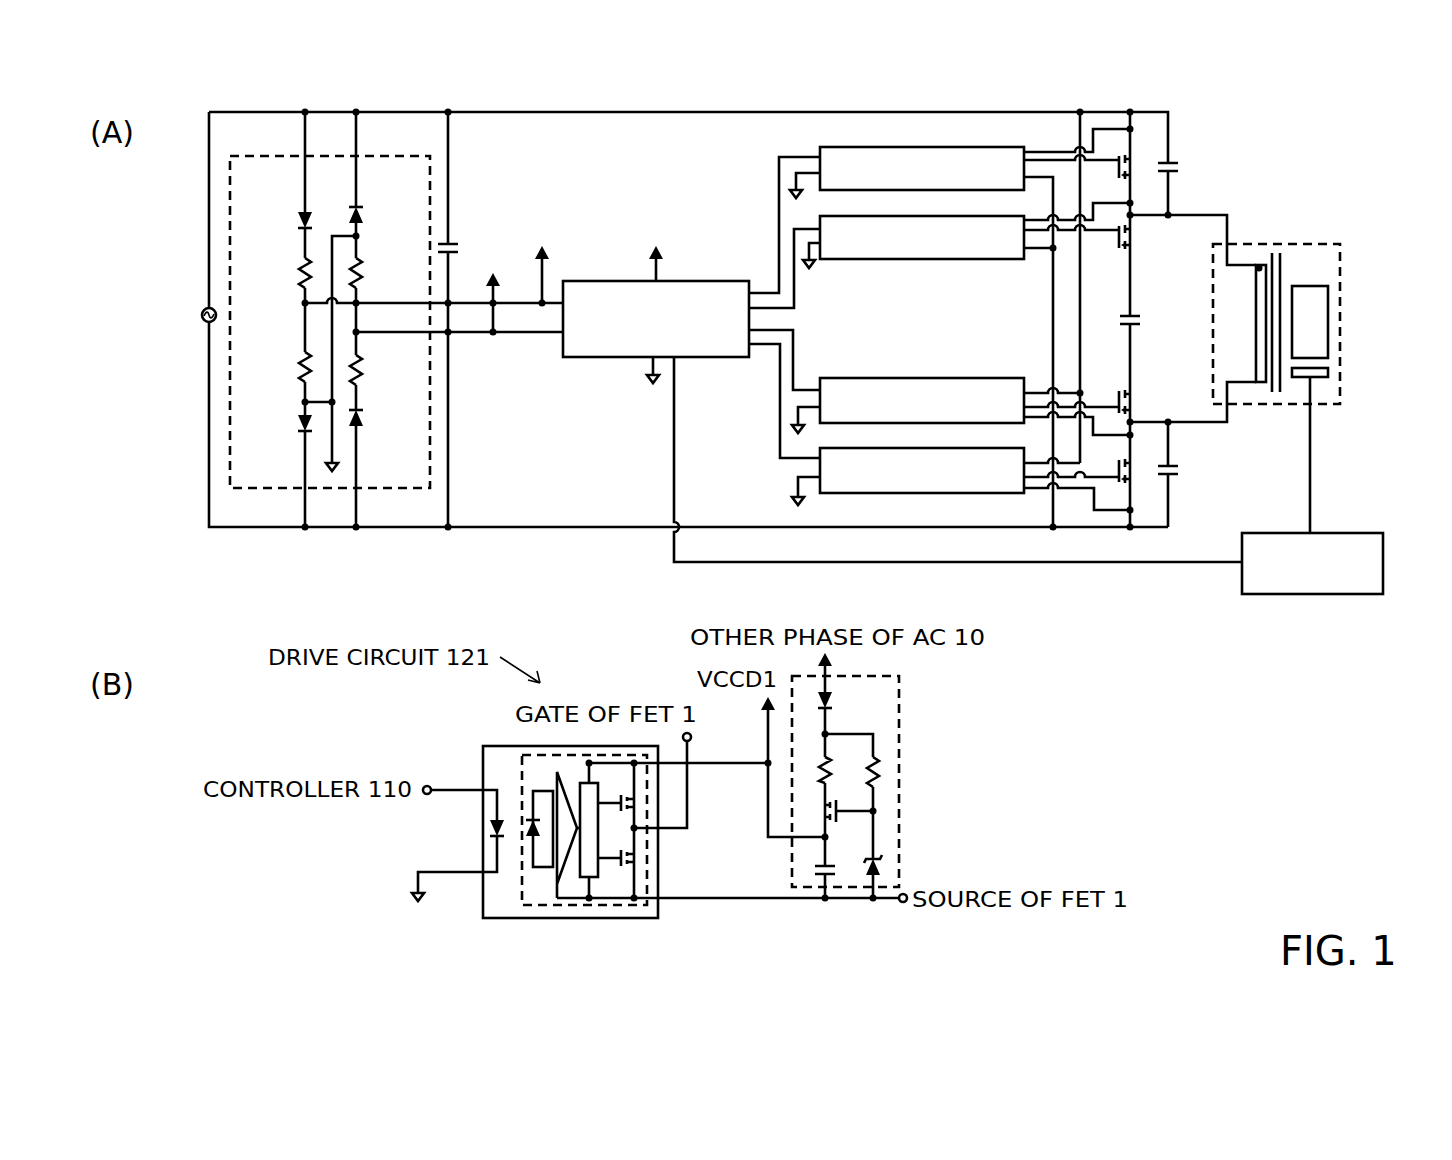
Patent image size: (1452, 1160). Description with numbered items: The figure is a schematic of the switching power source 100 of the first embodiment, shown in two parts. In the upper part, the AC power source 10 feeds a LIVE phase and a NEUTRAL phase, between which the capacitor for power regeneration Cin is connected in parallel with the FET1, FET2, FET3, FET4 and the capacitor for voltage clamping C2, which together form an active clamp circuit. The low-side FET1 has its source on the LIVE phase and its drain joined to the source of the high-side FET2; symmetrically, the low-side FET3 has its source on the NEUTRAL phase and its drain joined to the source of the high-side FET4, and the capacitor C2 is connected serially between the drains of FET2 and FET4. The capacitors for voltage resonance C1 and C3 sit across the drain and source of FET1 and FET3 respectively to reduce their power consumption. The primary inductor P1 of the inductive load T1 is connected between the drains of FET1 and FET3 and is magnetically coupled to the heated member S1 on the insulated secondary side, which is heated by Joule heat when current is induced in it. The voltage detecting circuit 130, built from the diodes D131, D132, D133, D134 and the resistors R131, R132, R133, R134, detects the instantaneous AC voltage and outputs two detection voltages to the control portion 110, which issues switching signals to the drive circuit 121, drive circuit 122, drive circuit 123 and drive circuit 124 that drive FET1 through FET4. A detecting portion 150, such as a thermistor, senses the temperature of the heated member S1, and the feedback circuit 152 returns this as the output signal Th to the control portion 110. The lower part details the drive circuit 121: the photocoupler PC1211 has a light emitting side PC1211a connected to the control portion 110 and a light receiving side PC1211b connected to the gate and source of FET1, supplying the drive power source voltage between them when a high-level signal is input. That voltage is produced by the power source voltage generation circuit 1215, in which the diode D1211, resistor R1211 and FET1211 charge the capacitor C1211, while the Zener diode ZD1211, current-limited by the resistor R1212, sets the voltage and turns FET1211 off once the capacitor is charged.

The AC power source 10 is at (200, 300).
The switching power source 100 is at (1304, 150).
The control portion 110 is at (714, 281).
The drive circuit 121 is at (948, 147).
The drive circuit 122 is at (922, 259).
The drive circuit 123 is at (943, 493).
The drive circuit 124 is at (920, 378).
The voltage detecting circuit 130 is at (430, 448).
The detecting portion 150 is at (1335, 372).
The feedback circuit 152 is at (1383, 563).
The power source voltage generation circuit 1215 is at (900, 810).
The capacitor for power regeneration Cin is at (452, 238).
The capacitor for voltage resonance C1 is at (1185, 167).
The capacitor for voltage clamping C2 is at (1128, 313).
The capacitor for voltage resonance C3 is at (1185, 470).
The field effect transistor FET1 is at (1140, 160).
The field effect transistor FET2 is at (1140, 245).
The field effect transistor FET3 is at (1140, 483).
The field effect transistor FET4 is at (1140, 397).
The inductive load T1 is at (1262, 243).
The primary inductor P1 is at (1244, 324).
The heated member S1 is at (1310, 322).
The output signal Th is at (958, 473).
The diode D131 is at (298, 216).
The diode D132 is at (298, 428).
The diode D133 is at (370, 428).
The diode D134 is at (362, 218).
The resistor R131 is at (300, 278).
The resistor R132 is at (300, 362).
The resistor R133 is at (368, 368).
The resistor R134 is at (362, 284).
The photocoupler PC1211 is at (618, 918).
The light emitting side PC1211a is at (489, 830).
The light receiving side PC1211b is at (520, 873).
The diode D1211 is at (835, 700).
The resistor R1211 is at (815, 777).
The resistor R1212 is at (880, 770).
The FET FET1211 is at (815, 820).
The capacitor C1211 is at (813, 881).
The Zener diode ZD1211 is at (884, 866).